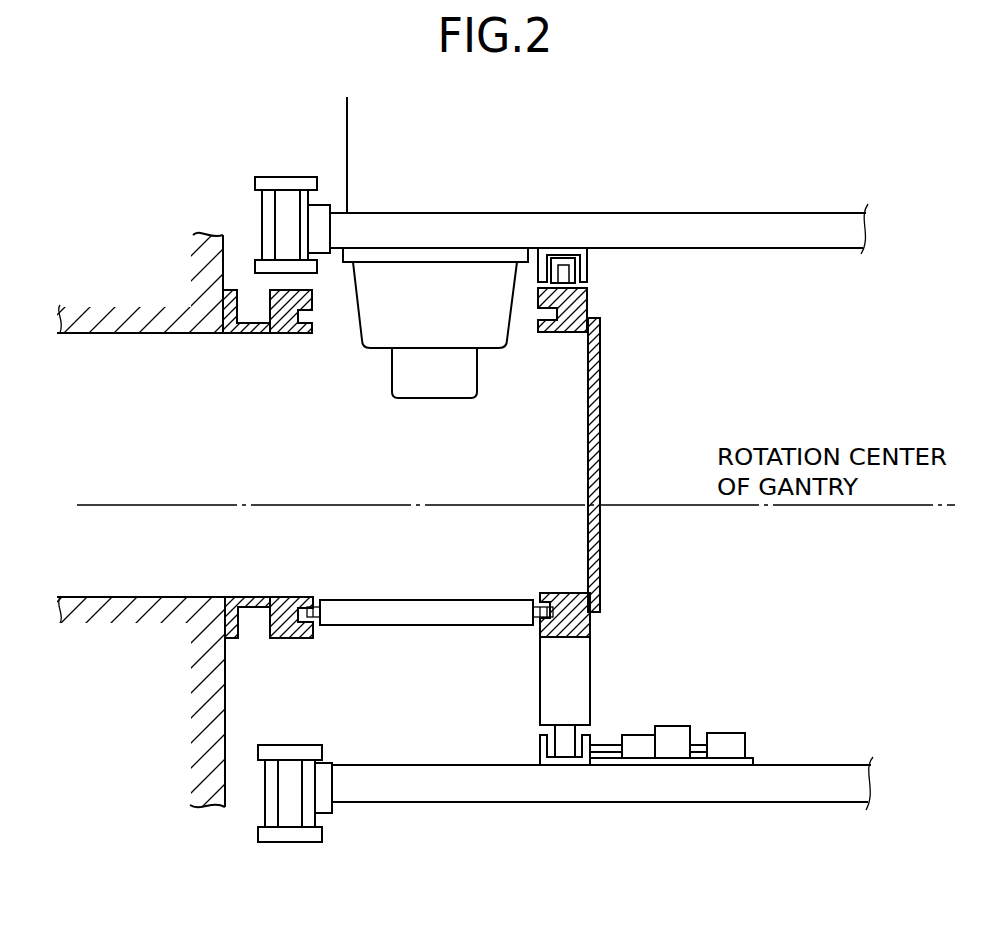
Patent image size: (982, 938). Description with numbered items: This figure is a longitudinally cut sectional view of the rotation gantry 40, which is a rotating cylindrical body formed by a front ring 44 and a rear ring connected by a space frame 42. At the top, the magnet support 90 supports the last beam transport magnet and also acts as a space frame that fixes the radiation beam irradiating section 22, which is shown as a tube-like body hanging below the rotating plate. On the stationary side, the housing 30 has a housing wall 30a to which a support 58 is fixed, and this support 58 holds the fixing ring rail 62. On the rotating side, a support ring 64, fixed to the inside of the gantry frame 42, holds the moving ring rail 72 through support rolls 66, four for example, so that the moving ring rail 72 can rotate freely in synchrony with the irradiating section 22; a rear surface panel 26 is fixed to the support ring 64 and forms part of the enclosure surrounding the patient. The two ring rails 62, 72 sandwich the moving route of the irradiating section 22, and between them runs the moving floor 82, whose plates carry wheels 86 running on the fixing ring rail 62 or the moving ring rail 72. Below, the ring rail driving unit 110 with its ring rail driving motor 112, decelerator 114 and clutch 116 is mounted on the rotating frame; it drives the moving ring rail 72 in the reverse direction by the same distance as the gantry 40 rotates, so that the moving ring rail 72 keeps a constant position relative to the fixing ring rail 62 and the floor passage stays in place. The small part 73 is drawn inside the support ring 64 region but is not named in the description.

The radiation beam irradiating section 22 is at (360, 345).
The rear surface panel 26 is at (600, 387).
The housing 30 is at (138, 597).
The housing wall 30a is at (223, 235).
The rotation gantry 40 is at (784, 363).
The space frame 42 is at (752, 793).
The front ring 44 is at (266, 177).
The support 58 is at (243, 335).
The fixing ring rail 62 is at (295, 335).
The support ring 64 is at (588, 258).
The support roll 66 is at (563, 733).
The moving ring rail 72 is at (580, 302).
The slider 73 is at (562, 273).
The moving floor 82 is at (408, 600).
The wheel 86 is at (297, 638).
The magnet support 90 is at (347, 122).
The ring rail driving unit 110 is at (745, 703).
The ring rail driving motor 112 is at (728, 733).
The decelerator 114 is at (688, 726).
The clutch 116 is at (645, 735).